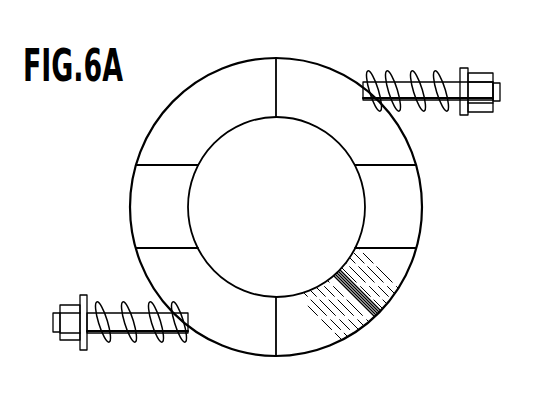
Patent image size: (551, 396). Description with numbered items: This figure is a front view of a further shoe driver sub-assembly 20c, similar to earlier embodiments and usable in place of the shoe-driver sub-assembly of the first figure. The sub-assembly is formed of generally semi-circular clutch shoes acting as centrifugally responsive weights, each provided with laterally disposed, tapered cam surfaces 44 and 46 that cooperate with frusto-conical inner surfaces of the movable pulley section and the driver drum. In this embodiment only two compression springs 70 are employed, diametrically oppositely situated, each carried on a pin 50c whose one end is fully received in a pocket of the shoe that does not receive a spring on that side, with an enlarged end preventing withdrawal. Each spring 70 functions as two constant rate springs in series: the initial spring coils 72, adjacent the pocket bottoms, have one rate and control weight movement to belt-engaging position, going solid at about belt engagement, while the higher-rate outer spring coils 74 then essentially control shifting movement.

The shoe driver sub-assembly 20c is at (293, 40).
The cam surface 44 is at (167, 208).
The cam surface 46 is at (210, 122).
The pin 50c is at (425, 72).
The compression spring 70 is at (454, 61).
The initial spring coils 72 is at (381, 74).
The outer spring coils 74 is at (424, 113).